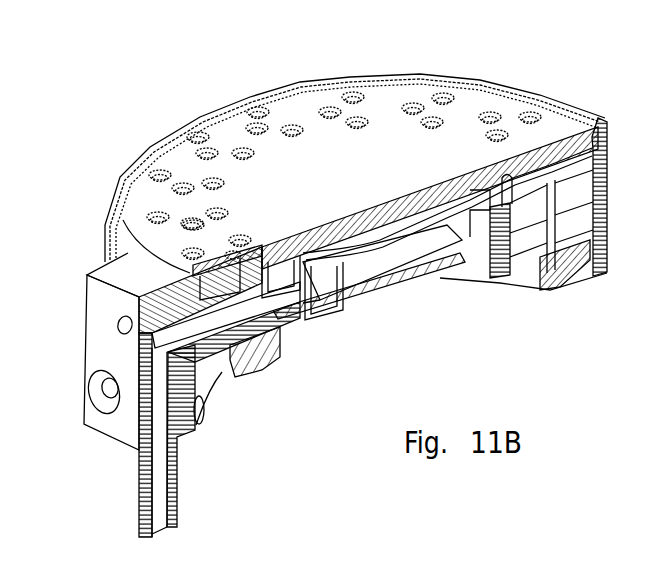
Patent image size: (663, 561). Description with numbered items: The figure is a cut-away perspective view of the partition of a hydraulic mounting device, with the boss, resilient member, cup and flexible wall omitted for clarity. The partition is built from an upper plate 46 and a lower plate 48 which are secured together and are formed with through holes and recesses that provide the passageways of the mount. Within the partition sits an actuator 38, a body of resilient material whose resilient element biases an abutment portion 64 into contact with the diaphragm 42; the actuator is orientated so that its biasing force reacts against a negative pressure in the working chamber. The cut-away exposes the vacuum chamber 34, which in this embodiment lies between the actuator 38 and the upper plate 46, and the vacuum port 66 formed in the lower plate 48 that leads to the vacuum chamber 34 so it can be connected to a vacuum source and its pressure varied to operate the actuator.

The vacuum chamber 34 is at (427, 213).
The actuator 38 is at (447, 227).
The diaphragm 42 is at (342, 307).
The upper plate 46 is at (373, 148).
The lower plate 48 is at (97, 307).
The abutment portion 64 is at (373, 273).
The vacuum port 66 is at (157, 477).